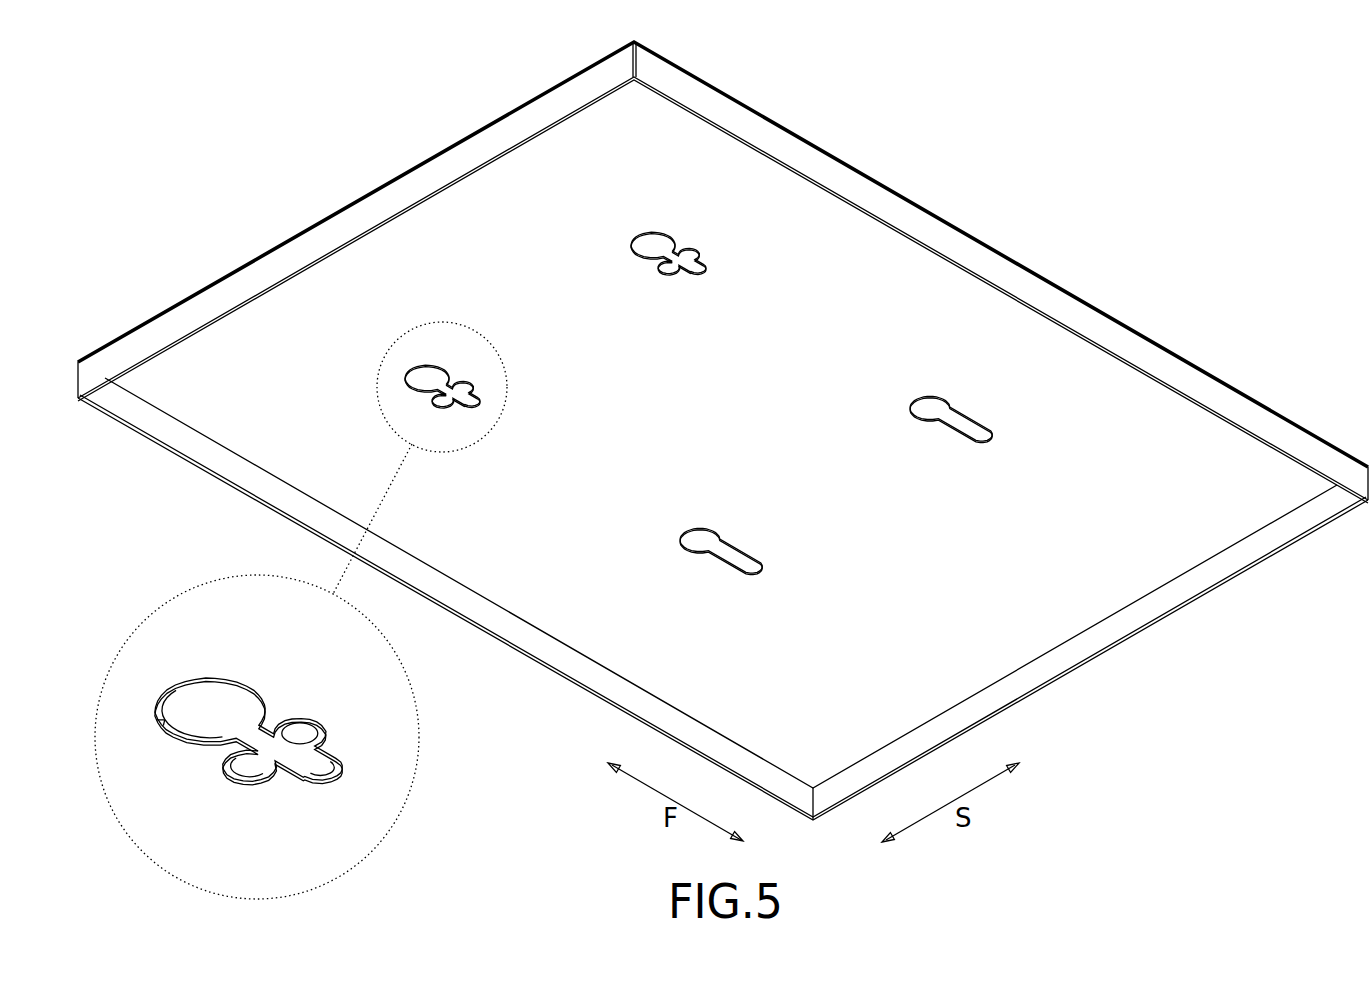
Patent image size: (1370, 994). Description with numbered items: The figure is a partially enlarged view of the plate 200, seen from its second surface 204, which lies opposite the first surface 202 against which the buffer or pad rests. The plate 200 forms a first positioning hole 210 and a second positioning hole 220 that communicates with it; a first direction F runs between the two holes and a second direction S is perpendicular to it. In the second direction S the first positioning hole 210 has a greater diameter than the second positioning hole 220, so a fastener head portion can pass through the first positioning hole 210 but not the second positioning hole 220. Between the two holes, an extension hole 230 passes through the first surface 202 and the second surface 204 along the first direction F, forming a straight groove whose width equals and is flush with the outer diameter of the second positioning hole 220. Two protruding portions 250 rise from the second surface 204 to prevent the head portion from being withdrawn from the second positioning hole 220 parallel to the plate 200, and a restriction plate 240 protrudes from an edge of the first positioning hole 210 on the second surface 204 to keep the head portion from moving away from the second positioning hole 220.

The plate 200 is at (1020, 250).
The first surface 202 is at (1118, 320).
The second surface 204 is at (1070, 600).
The first positioning hole 210 is at (208, 717).
The second positioning hole 220 is at (335, 778).
The extension hole 230 is at (278, 757).
The restriction plate 240 is at (168, 703).
The protruding portions 250 is at (303, 752).